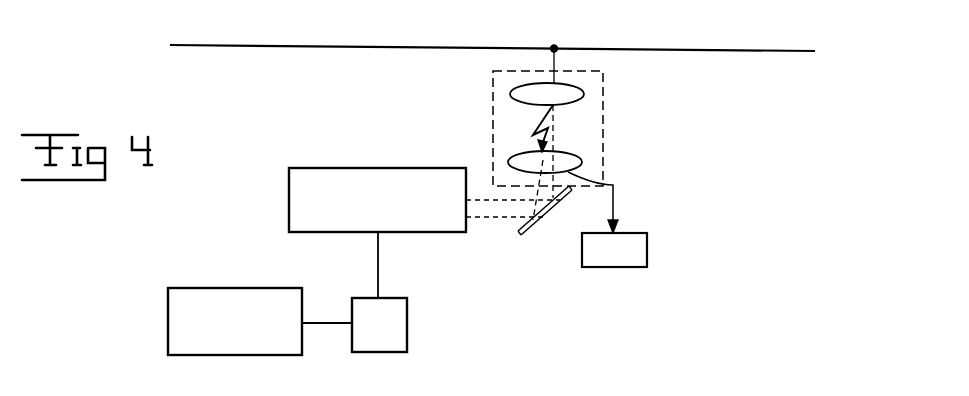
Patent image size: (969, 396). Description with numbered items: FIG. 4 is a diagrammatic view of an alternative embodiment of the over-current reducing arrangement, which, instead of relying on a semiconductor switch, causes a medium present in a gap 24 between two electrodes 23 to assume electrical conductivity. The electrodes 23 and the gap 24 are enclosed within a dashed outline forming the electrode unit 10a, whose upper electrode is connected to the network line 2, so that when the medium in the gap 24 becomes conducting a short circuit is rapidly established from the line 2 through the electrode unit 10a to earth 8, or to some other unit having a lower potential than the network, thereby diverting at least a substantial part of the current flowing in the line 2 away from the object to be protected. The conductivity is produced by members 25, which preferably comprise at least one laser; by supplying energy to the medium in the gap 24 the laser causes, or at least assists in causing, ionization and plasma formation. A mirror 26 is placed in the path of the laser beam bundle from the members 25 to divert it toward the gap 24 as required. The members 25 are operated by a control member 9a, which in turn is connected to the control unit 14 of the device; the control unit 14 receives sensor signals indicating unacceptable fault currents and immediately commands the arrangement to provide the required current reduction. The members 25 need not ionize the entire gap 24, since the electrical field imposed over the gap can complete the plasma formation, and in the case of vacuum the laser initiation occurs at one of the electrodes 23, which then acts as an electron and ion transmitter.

The line 2 is at (275, 45).
The earth 8 is at (630, 250).
The control member 9a is at (393, 335).
The optical unit 10a is at (613, 113).
The control unit 14 is at (212, 305).
The electrodes 23 is at (525, 160).
The gap 24 is at (567, 120).
The members 25 is at (327, 180).
The mirror 26 is at (531, 238).